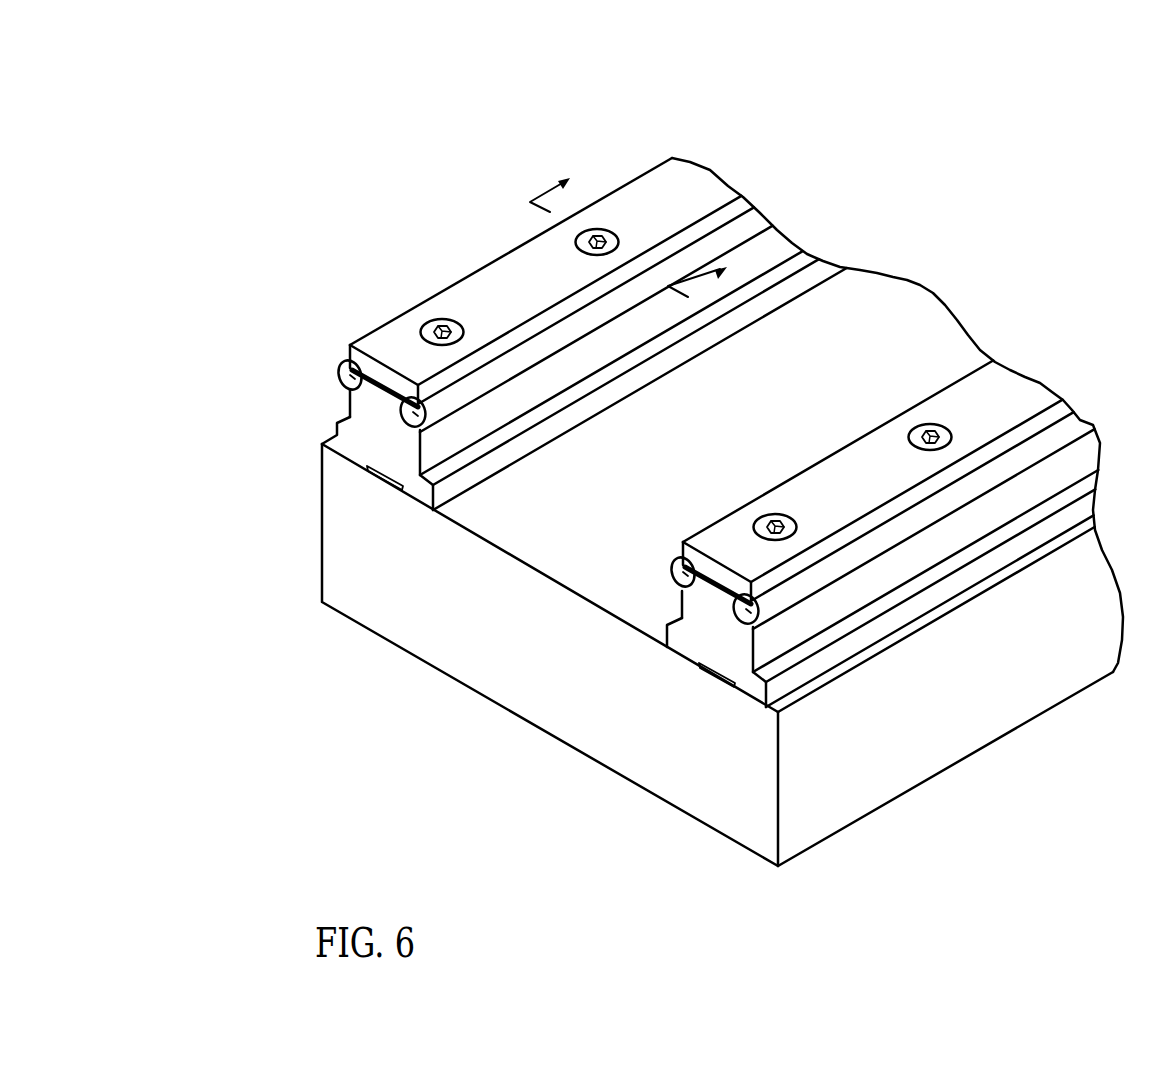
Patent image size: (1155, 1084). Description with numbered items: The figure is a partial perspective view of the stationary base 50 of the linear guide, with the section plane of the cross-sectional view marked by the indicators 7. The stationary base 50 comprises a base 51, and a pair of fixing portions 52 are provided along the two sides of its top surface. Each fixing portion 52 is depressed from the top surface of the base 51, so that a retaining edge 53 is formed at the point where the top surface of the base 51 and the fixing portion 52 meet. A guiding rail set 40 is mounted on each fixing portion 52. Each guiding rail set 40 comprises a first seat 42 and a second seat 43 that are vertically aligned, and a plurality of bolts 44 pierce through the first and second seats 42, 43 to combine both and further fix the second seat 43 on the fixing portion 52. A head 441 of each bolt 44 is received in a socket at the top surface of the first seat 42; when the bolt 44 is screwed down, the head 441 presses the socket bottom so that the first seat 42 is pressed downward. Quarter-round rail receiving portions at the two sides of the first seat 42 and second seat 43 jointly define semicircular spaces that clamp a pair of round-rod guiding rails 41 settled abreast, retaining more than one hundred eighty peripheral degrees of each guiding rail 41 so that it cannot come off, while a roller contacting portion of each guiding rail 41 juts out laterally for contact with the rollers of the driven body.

The guiding rail set 40 is at (685, 403).
The guiding rail 41 is at (341, 375).
The first seat 42 is at (390, 368).
The second seat 43 is at (393, 443).
The bolt 44 is at (686, 375).
The head 441 is at (466, 328).
The stationary base 50 is at (306, 494).
The base 51 is at (493, 688).
The fixing portion 52 is at (360, 477).
The retaining edge 53 is at (565, 430).
The section line 7- 7 is at (639, 224).